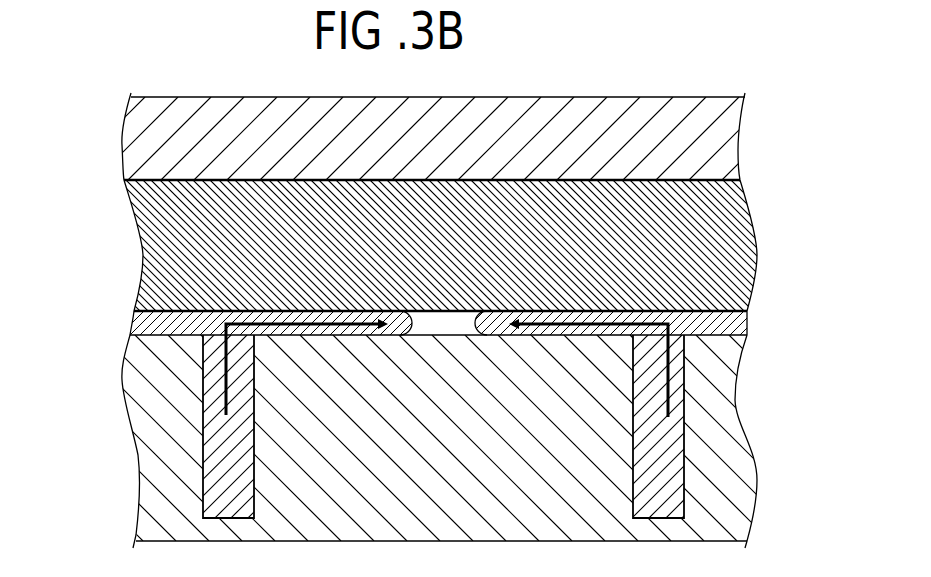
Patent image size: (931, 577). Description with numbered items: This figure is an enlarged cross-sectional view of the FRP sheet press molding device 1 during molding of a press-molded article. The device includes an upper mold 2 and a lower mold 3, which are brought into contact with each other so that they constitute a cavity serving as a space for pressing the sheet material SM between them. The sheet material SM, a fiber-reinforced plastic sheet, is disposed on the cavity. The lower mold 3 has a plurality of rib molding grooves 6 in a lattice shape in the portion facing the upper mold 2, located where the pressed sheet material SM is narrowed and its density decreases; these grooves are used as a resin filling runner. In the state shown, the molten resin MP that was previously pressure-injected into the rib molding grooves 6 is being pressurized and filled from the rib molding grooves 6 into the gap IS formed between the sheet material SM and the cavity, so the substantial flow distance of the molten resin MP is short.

The FRP sheet press molding device 1 is at (764, 143).
The upper mold 2 is at (128, 147).
The lower mold 3 is at (150, 453).
The rib molding groove 6 is at (205, 373).
The sheet material SM is at (140, 230).
The gap IS is at (443, 320).
The molten resin MP is at (220, 496).